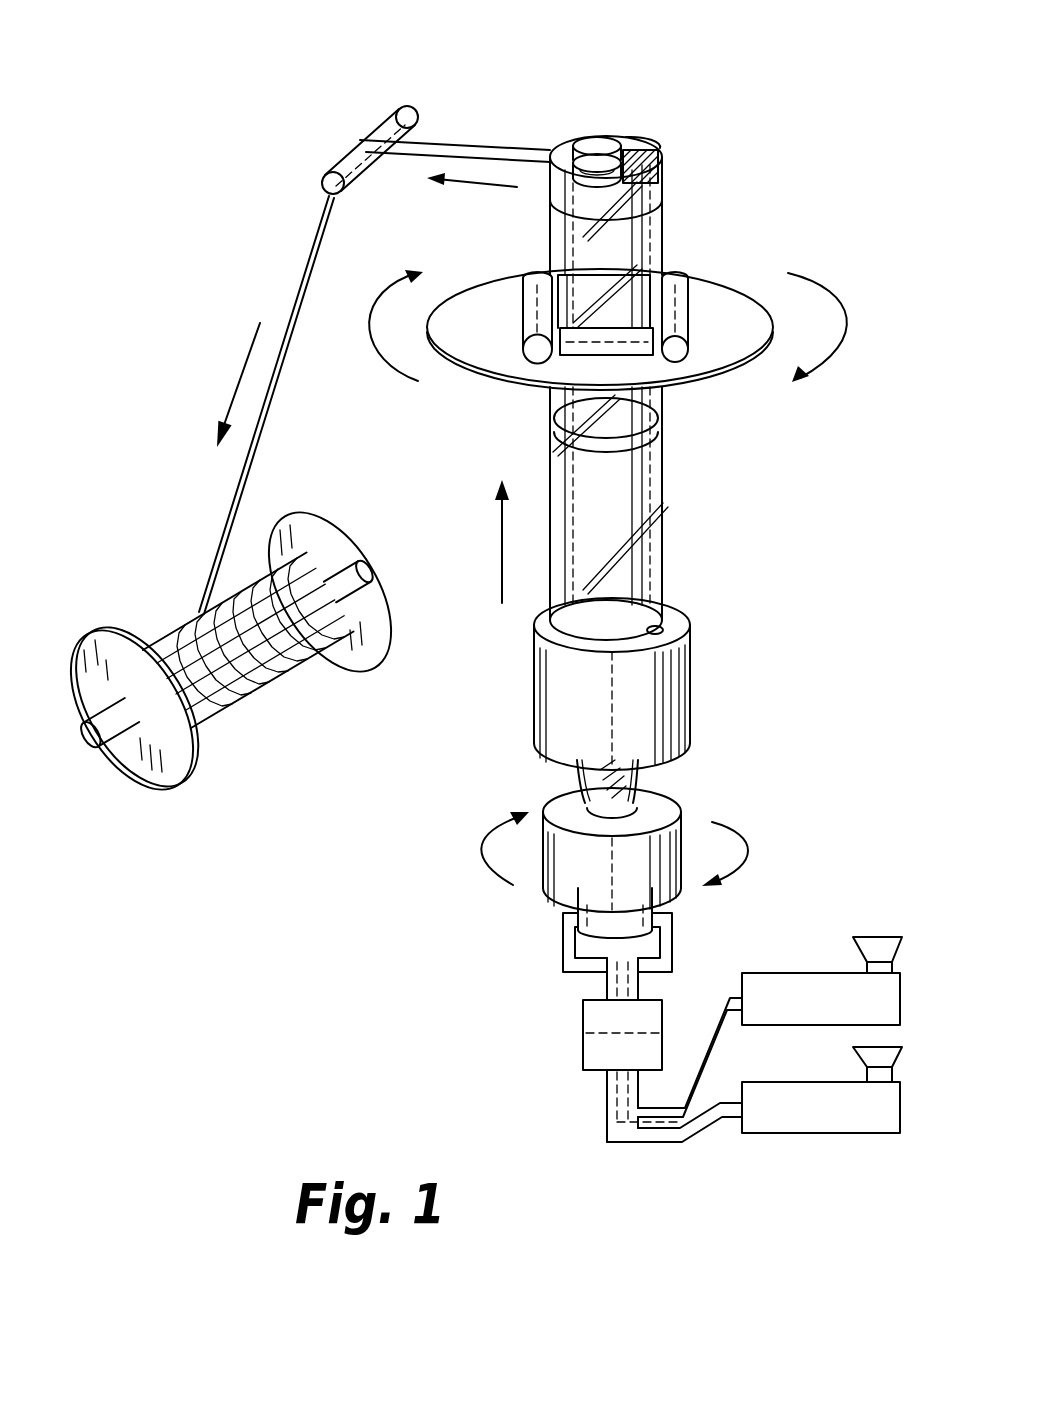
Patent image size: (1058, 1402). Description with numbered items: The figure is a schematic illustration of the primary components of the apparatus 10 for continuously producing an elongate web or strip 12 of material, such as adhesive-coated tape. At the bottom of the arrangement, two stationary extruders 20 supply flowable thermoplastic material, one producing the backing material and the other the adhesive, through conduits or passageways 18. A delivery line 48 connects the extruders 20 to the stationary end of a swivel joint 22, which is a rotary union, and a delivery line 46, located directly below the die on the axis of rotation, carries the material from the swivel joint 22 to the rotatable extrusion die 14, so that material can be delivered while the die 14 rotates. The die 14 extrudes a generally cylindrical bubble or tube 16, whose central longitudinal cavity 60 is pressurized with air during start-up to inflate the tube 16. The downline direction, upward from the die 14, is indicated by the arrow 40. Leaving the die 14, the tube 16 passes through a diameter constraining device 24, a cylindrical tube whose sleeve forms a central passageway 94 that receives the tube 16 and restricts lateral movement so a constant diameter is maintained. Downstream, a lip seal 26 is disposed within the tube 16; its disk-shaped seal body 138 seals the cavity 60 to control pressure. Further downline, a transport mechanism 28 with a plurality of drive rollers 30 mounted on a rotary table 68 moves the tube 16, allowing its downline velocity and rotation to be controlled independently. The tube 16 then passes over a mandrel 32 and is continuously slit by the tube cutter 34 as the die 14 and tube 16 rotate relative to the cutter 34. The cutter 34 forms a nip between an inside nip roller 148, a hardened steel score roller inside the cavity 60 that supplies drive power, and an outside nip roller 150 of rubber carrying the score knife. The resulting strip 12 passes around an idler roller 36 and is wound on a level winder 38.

The apparatus 10 is at (445, 830).
The strip 12 is at (472, 137).
The rotatable extrusion die 14 is at (575, 883).
The tube 16 is at (663, 545).
The passageways 18 is at (635, 1152).
The extruders 20 is at (822, 1010).
The swivel joint 22 is at (583, 1045).
The diameter constraining device 24 is at (557, 723).
The lip seal 26 is at (560, 413).
The transport mechanism 28 is at (452, 370).
The rollers 30 is at (637, 340).
The mandrel 32 is at (655, 215).
The tube cutter 34 is at (645, 131).
The idler roller 36 is at (343, 160).
The level winder 38 is at (152, 795).
The arrow 40 is at (502, 560).
The delivery line 46 is at (588, 965).
The delivery line 48 is at (607, 1130).
The central longitudinal cavity 60 is at (648, 133).
The rotary table 68 is at (738, 298).
The central passageway 94 is at (663, 628).
The seal body 138 is at (650, 438).
The inside nip roller 148 is at (598, 138).
The outside nip roller 150 is at (563, 208).